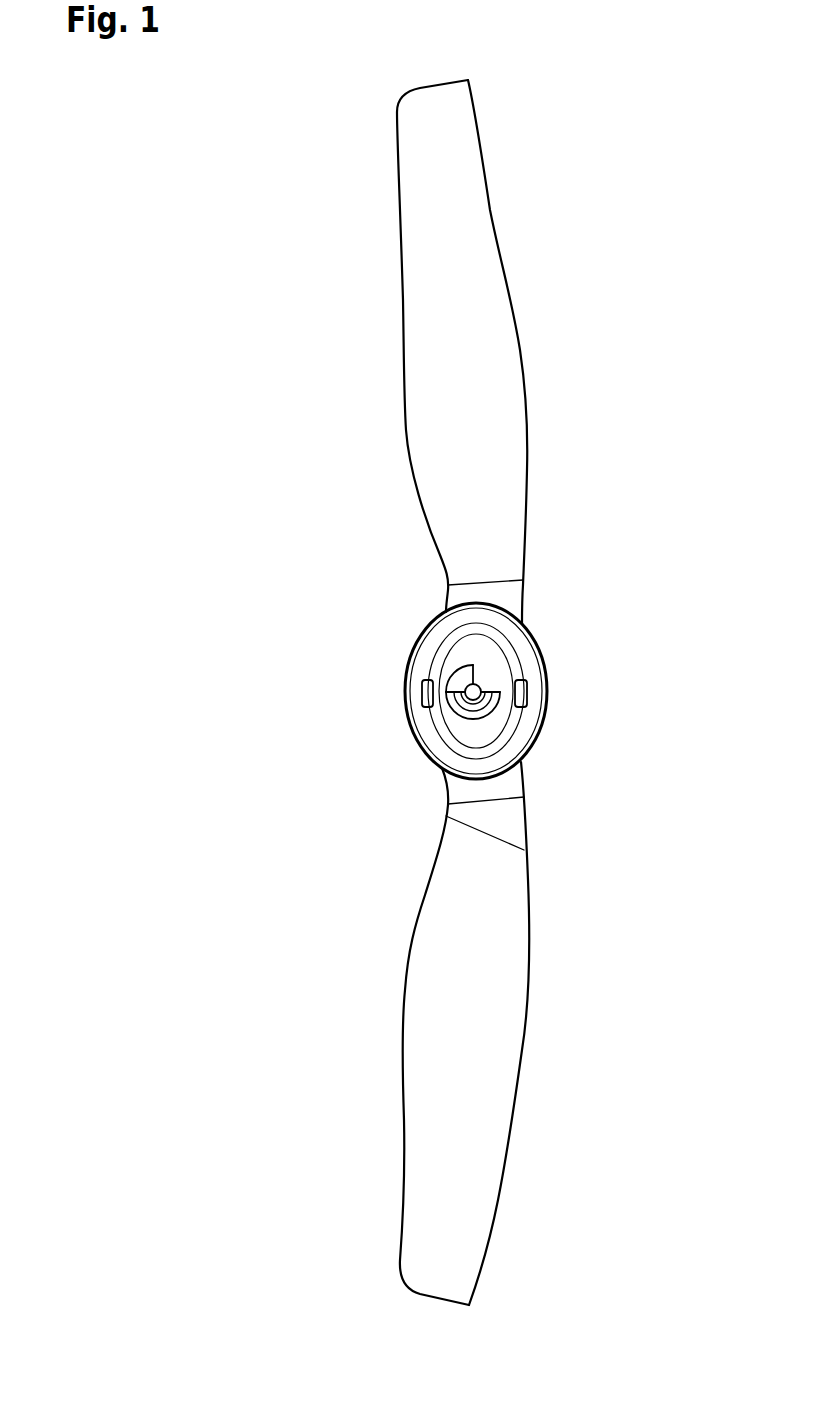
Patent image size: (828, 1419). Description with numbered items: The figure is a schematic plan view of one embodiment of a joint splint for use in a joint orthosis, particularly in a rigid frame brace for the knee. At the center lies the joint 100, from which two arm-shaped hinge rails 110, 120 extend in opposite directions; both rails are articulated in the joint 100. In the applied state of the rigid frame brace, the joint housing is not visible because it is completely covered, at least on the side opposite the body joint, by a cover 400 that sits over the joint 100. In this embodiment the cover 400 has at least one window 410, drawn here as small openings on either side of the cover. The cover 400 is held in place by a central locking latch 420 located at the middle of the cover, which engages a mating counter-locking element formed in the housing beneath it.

The joint 100 is at (553, 645).
The hinge rail 110 is at (500, 395).
The hinge rail 120 is at (495, 1054).
The cover 400 is at (522, 722).
The window 410 is at (424, 693).
The central locking latch 420 is at (462, 712).